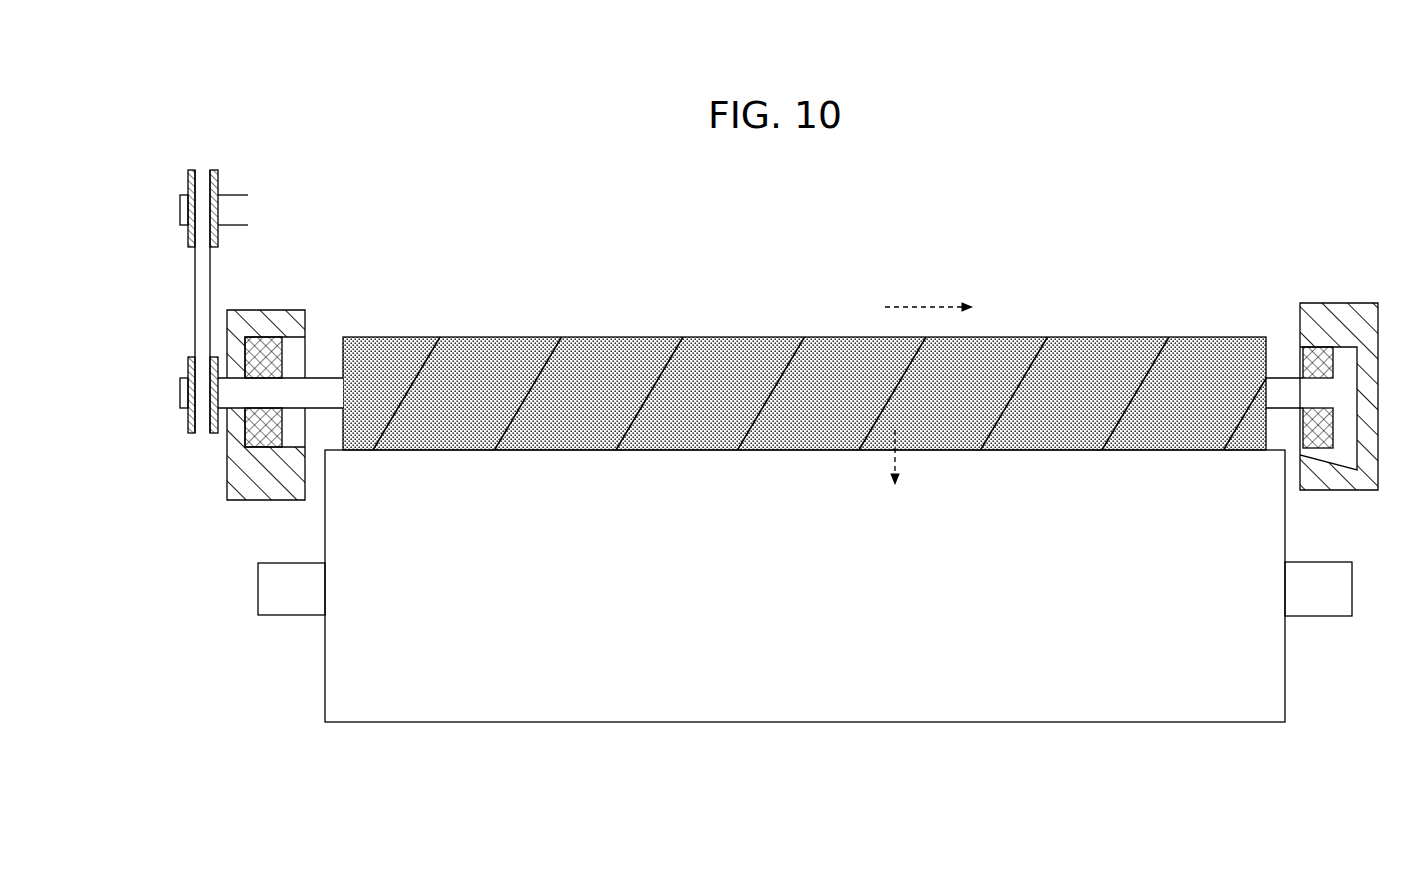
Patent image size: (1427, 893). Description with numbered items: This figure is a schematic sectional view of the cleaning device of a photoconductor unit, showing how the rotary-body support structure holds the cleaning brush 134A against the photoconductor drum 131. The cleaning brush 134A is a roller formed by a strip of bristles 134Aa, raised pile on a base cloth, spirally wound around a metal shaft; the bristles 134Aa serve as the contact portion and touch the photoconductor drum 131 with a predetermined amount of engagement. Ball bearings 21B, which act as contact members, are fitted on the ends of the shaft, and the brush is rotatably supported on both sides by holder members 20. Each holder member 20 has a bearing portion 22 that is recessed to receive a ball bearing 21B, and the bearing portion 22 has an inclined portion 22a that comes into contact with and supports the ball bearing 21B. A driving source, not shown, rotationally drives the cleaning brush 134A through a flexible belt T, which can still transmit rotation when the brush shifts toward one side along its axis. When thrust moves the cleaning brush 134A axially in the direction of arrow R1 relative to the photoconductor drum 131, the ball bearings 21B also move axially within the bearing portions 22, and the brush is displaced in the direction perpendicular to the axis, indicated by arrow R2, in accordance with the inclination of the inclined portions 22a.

The holder member 20 is at (784, 352).
The ball bearing 21B is at (302, 359).
The bearing portion 22 is at (254, 375).
The inclined portion 22a is at (300, 357).
The photoconductor drum 131 is at (819, 603).
The cleaning brush 134A is at (817, 348).
The bristles 134Aa is at (720, 350).
The belt T is at (200, 300).
The arrow R1 is at (928, 292).
The arrow R2 is at (916, 466).